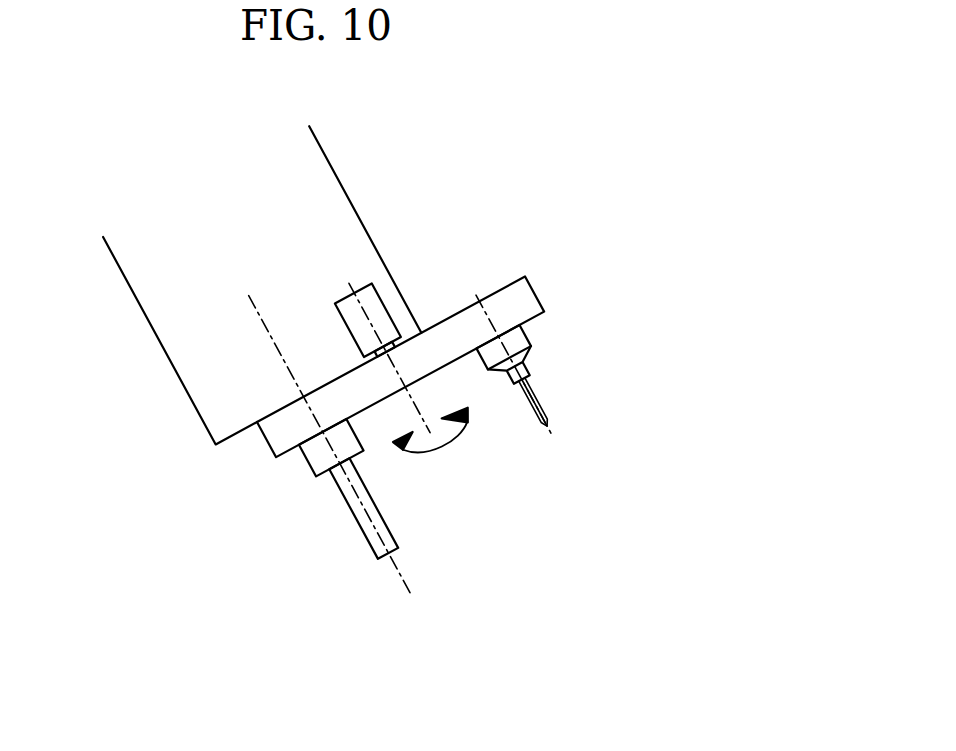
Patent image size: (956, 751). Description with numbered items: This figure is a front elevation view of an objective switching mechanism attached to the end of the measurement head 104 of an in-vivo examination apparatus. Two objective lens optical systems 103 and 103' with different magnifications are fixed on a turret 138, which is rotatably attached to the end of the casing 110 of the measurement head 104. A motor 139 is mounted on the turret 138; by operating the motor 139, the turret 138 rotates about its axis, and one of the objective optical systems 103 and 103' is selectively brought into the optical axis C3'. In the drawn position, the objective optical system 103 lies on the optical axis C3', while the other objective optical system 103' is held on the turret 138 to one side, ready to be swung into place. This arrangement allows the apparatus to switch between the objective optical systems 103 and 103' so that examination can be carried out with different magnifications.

The objective lens optical system 103 is at (323, 530).
The objective lens optical system 103' is at (553, 344).
The measurement head 104 is at (195, 538).
The casing 110 is at (175, 380).
The turret 138 is at (454, 316).
The motor 139 is at (383, 300).
The optical axis C3' is at (374, 431).